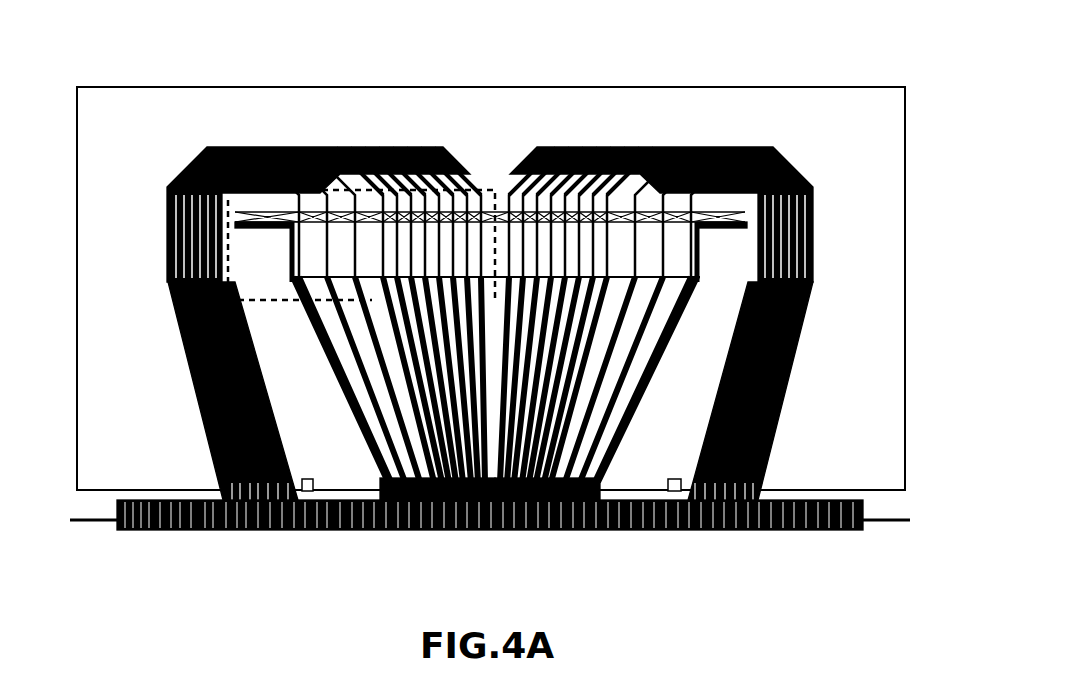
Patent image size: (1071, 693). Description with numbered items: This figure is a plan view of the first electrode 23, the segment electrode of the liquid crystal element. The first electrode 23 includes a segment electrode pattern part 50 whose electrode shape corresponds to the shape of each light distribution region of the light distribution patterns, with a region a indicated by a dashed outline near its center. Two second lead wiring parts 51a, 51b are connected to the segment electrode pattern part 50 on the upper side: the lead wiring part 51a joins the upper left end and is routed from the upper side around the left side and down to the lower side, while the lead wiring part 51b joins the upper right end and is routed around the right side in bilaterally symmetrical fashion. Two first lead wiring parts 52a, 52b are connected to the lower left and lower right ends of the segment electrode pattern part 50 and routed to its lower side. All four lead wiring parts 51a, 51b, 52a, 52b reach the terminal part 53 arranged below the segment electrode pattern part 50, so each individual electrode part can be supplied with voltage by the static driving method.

The first electrode 23 is at (870, 71).
The segment electrode pattern part 50 is at (504, 196).
The region a is at (492, 186).
The lead wiring part 51a is at (300, 140).
The lead wiring part 51b is at (682, 140).
The lead wiring part 52a is at (358, 474).
The lead wiring part 52b is at (620, 476).
The terminal part 53 is at (106, 529).